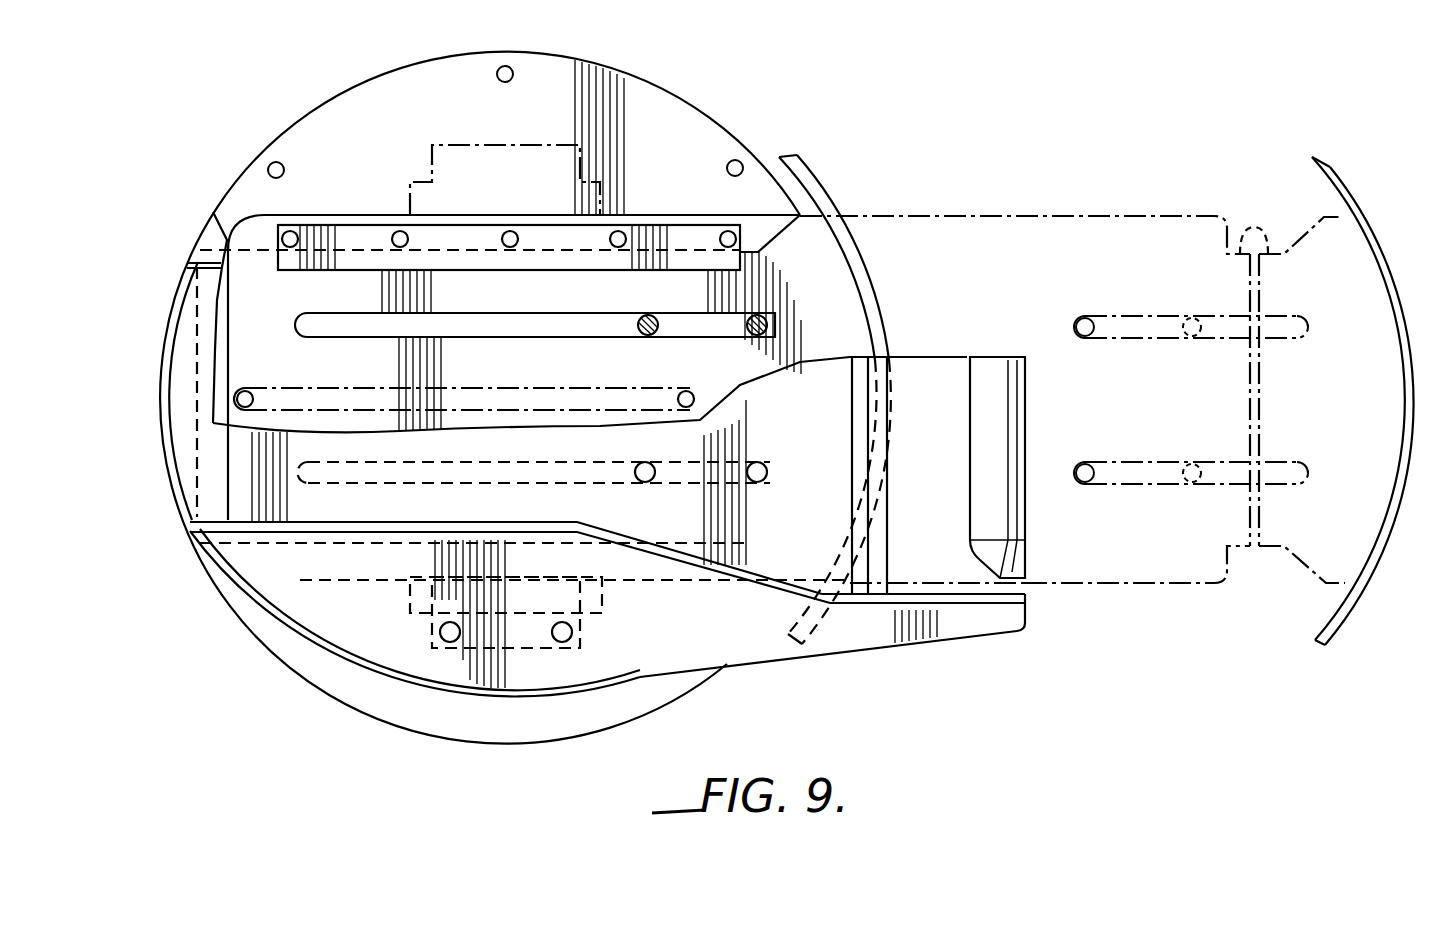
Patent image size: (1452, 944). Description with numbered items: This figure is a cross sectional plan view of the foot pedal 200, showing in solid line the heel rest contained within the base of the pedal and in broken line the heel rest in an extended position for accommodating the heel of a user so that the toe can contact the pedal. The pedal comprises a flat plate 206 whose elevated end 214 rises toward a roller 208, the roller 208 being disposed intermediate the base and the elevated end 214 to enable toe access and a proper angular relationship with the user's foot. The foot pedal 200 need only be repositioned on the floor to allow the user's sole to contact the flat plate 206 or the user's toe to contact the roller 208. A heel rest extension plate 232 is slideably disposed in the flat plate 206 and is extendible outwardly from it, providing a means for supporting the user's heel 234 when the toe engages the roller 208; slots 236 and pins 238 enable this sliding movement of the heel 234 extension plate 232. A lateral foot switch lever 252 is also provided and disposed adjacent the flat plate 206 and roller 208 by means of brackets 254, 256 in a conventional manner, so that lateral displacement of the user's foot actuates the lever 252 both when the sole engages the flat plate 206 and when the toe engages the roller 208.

The foot pedal 200 is at (1026, 580).
The flat plate 206 is at (838, 455).
The roller 208 is at (1024, 440).
The elevated end 214 is at (850, 392).
The heel rest extension plate 232 is at (752, 257).
The heel 234 is at (847, 233).
The slots 236 is at (505, 330).
The pins 238 is at (765, 326).
The lateral foot switch lever 252 is at (907, 637).
The bracket 254 is at (506, 144).
The bracket 256 is at (515, 640).